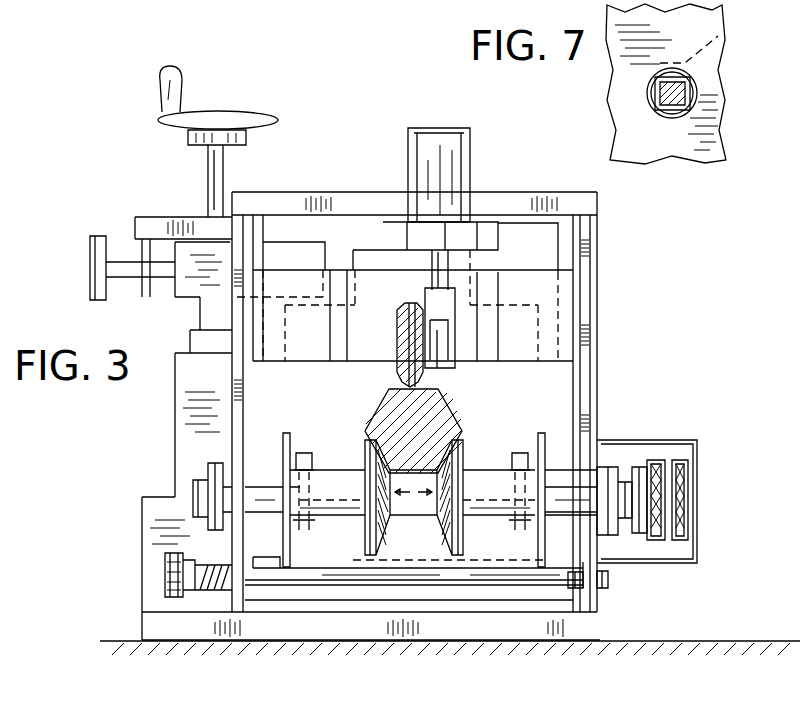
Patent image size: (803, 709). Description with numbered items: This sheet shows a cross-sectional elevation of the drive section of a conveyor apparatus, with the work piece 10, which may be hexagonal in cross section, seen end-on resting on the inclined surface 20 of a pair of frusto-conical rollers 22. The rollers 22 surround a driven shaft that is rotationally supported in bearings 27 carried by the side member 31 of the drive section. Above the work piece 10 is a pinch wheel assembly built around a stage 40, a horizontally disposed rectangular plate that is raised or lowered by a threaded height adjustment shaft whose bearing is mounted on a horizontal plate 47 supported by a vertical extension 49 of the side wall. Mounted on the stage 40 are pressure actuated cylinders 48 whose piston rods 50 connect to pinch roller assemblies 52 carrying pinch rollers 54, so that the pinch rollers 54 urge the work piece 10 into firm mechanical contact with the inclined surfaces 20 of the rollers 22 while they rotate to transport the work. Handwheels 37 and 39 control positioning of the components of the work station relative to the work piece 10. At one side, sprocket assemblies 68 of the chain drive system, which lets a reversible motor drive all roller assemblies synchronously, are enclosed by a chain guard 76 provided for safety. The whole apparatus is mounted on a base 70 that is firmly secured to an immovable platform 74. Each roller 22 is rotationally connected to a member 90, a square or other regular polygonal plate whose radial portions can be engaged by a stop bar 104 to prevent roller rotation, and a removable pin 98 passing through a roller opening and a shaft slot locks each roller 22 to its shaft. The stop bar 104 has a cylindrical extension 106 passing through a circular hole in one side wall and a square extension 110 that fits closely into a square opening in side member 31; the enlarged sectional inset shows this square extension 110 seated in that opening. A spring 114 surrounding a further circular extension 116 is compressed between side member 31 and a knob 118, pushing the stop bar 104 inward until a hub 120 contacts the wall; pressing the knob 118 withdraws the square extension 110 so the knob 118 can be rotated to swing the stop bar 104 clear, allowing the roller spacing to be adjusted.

In FIG. 3, the work piece 10 is at (450, 410).
In FIG. 3, the inclined surface 20 is at (445, 521).
In FIG. 3, the frusto-conical rollers 22 is at (340, 470).
In FIG. 3, the bearings 27 is at (215, 478).
In FIG. 7, the side member 31 is at (690, 155).
In FIG. 3, the handwheel 37 is at (262, 114).
In FIG. 3, the handwheel 39 is at (92, 255).
In FIG. 3, the stage 40 is at (497, 232).
In FIG. 3, the horizontal plate 47 is at (525, 200).
In FIG. 3, the pressure actuated cylinders 48 is at (418, 172).
In FIG. 3, the vertical extension 49 is at (598, 325).
In FIG. 3, the piston rods 50 is at (432, 268).
In FIG. 3, the pinch roller assemblies 52 is at (465, 328).
In FIG. 3, the pinch rollers 54 is at (400, 342).
In FIG. 3, the sprocket assemblies 68 is at (676, 490).
In FIG. 3, the base 70 is at (605, 638).
In FIG. 3, the immovable platform 74 is at (478, 650).
In FIG. 3, the chain guard 76 is at (680, 440).
In FIG. 3, the member 90 is at (281, 478).
In FIG. 3, the removable pin 98 is at (305, 452).
In FIG. 3, the stop bar 104 is at (383, 578).
In FIG. 7, the stop bar 104 is at (718, 36).
In FIG. 3, the cylindrical extension 106 is at (590, 587).
In FIG. 7, the square extension 110 is at (655, 93).
In FIG. 3, the spring 114 is at (208, 592).
In FIG. 7, the spring 114 is at (660, 120).
In FIG. 7, the further circular extension 116 is at (652, 105).
In FIG. 3, the knob 118 is at (170, 563).
In FIG. 3, the hub 120 is at (612, 582).